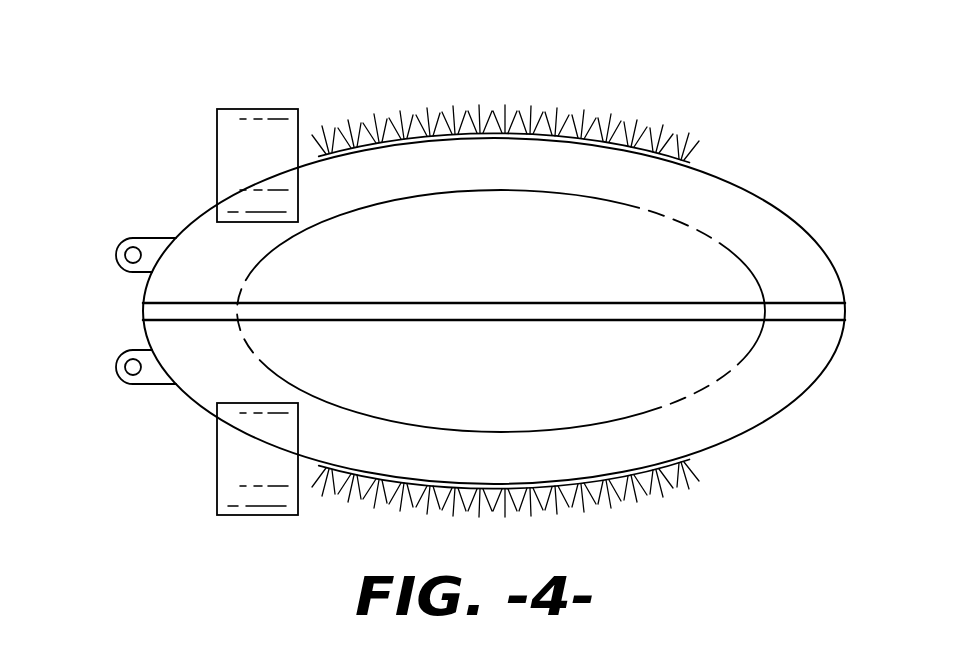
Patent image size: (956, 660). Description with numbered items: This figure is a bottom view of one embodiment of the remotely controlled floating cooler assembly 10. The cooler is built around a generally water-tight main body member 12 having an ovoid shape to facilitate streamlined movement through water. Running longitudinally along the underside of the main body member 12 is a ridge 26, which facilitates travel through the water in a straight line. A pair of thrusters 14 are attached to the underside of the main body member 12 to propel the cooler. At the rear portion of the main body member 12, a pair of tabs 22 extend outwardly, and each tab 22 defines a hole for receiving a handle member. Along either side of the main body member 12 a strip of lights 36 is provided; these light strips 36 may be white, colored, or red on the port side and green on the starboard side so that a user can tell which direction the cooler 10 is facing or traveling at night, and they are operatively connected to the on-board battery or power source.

The remotely controlled floating cooler assembly 10 is at (797, 422).
The main body member 12 is at (698, 187).
The attachment block 14 is at (254, 111).
The tabs 22 is at (145, 248).
The longitudinally extending ridge 26 is at (817, 308).
The strip of lights 36 is at (536, 135).